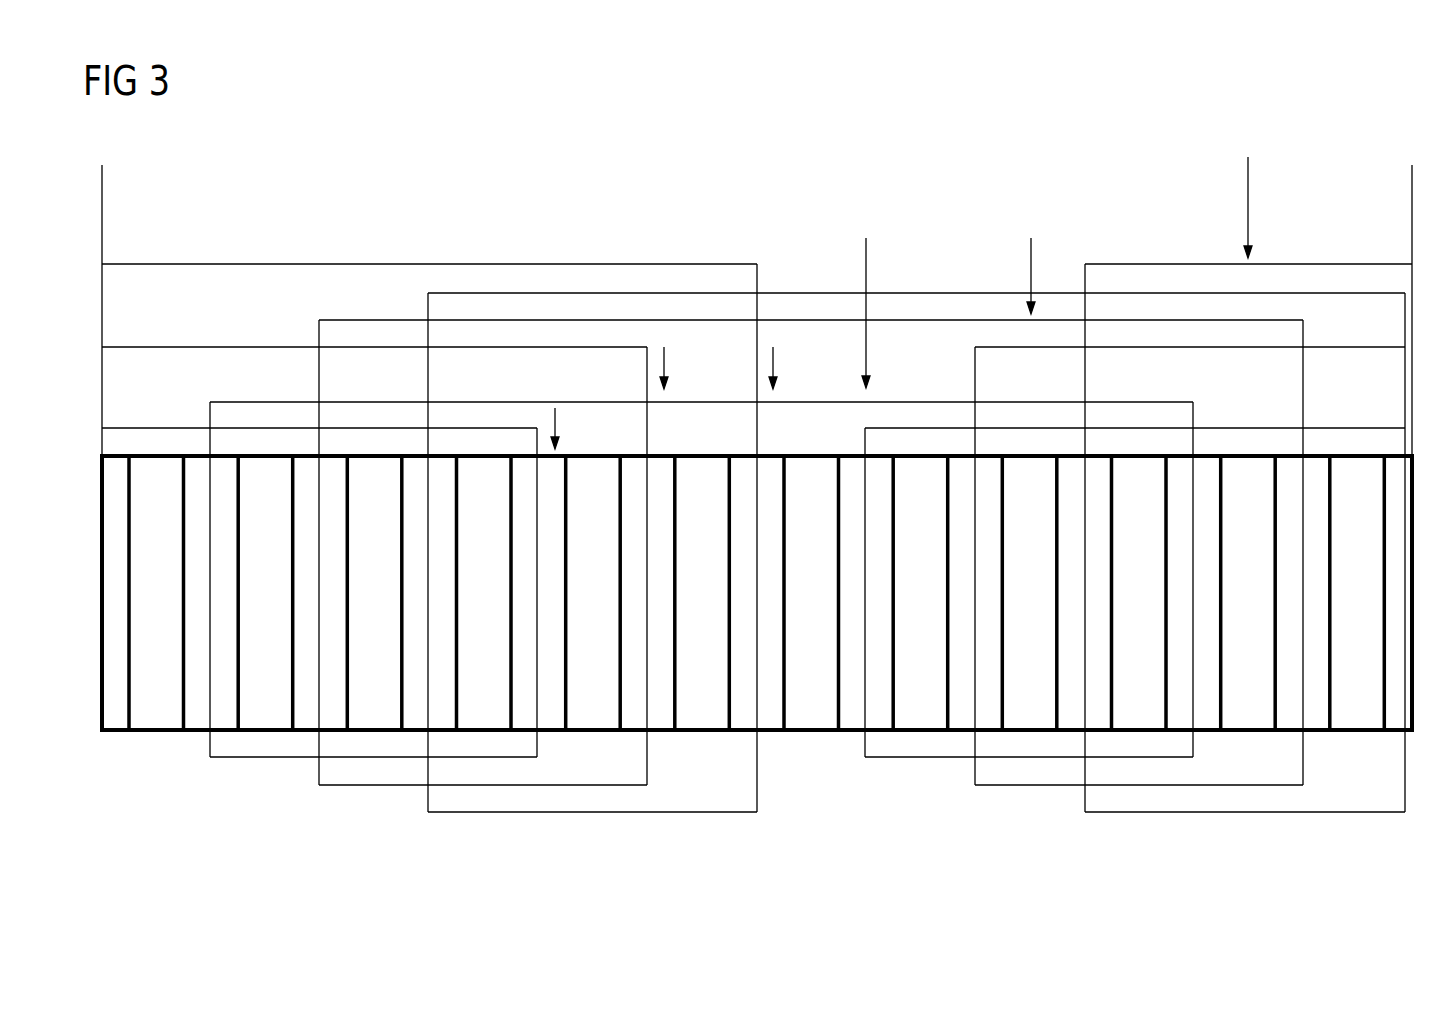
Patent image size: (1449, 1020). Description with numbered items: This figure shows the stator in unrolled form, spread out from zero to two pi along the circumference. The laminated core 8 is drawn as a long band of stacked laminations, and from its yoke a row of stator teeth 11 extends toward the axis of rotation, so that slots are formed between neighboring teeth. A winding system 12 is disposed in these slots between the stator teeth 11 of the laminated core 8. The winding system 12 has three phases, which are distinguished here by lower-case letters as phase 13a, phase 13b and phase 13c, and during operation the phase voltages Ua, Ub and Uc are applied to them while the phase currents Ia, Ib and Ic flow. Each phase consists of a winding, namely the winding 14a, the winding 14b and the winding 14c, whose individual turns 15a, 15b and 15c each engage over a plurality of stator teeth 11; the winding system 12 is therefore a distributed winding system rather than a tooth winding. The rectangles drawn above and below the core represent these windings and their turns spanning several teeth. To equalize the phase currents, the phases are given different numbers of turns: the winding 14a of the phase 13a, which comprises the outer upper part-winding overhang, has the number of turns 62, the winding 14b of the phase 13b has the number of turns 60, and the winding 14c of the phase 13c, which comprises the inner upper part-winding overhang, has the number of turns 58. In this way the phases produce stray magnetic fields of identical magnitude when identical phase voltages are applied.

The laminated core 8 is at (808, 733).
The stator teeth 11 is at (171, 610).
The winding system 12 is at (824, 186).
The phase 13a is at (757, 542).
The phase 13b is at (753, 594).
The phase 13c is at (753, 600).
The winding 14a is at (592, 578).
The turns 15a is at (608, 812).
The winding 14b is at (697, 594).
The turns 15b is at (1017, 785).
The winding 14c is at (373, 620).
The turns 15c is at (268, 757).
The number of turns of winding 14c 58 is at (1006, 417).
The number of turns of winding 14b 60 is at (1252, 330).
The number of turns of winding 14a 62 is at (1328, 283).